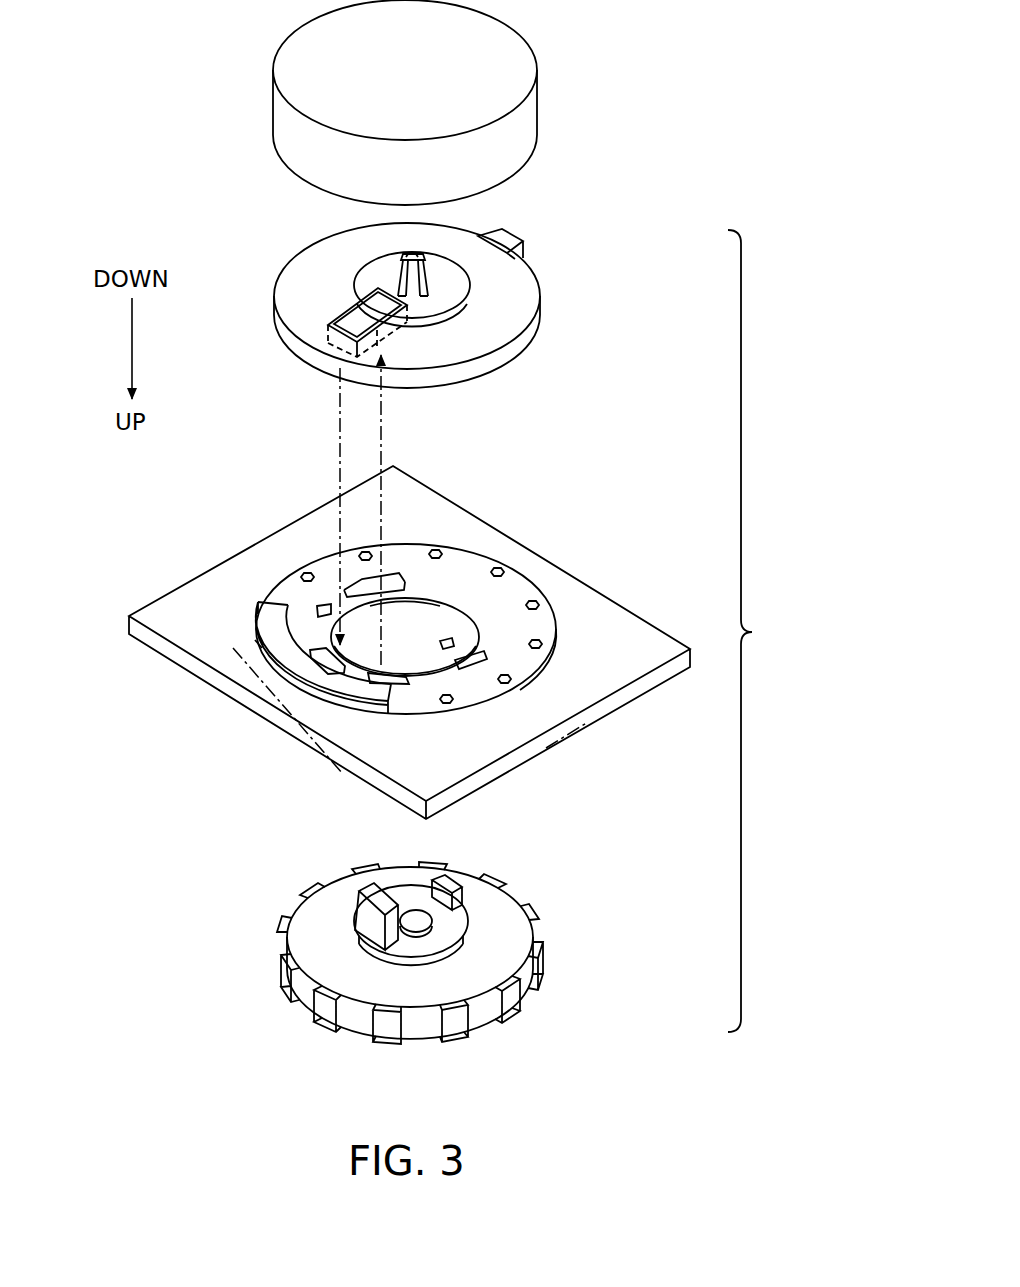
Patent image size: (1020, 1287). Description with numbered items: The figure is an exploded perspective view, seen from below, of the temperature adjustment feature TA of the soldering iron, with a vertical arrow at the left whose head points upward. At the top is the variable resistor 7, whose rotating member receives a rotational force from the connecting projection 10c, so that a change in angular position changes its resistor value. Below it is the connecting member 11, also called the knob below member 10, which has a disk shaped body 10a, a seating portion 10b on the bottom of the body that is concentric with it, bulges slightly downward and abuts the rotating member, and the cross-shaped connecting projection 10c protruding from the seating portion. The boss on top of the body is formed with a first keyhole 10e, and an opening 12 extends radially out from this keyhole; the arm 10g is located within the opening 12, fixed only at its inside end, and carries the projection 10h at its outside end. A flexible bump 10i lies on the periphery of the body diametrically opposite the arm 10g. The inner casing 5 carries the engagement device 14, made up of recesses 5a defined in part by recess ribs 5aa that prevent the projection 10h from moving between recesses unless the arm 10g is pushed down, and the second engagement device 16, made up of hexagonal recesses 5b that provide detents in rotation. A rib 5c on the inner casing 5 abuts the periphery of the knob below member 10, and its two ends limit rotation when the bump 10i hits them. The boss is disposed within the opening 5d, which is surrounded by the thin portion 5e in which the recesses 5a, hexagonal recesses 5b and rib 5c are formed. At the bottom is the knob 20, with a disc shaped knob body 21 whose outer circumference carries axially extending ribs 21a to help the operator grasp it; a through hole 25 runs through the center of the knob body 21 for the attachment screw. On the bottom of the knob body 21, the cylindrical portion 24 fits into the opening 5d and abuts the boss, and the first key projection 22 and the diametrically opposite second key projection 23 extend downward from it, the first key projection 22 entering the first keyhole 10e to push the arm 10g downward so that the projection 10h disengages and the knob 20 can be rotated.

The variable resistor 7 is at (243, 50).
The knob below member 10 is at (238, 214).
The connecting member 11 is at (556, 302).
The disk shaped body 10a is at (512, 347).
The seating portion 10b is at (440, 308).
The connecting projection 10c is at (399, 262).
The first keyhole 10e is at (413, 333).
The arm 10g is at (357, 317).
The projection 10h is at (330, 343).
The bump 10i is at (517, 250).
The opening 12 is at (322, 322).
The inner casing 5 is at (631, 641).
The recess 5a is at (388, 574).
The recess rib 5aa is at (409, 680).
The hexagonal recess 5b is at (303, 565).
The rib 5c is at (260, 649).
The opening 5d is at (437, 597).
The thin portion 5e is at (543, 630).
The engagement device 14 is at (292, 625).
The second engagement device 16 is at (538, 560).
The knob 20 is at (258, 862).
The knob body 21 is at (520, 982).
The rib 21a is at (287, 983).
The first key projection 22 is at (346, 916).
The second key projection 23 is at (462, 882).
The cylindrical portion 24 is at (450, 932).
The through hole 25 is at (422, 926).
The temperature adjustment feature TA is at (759, 631).